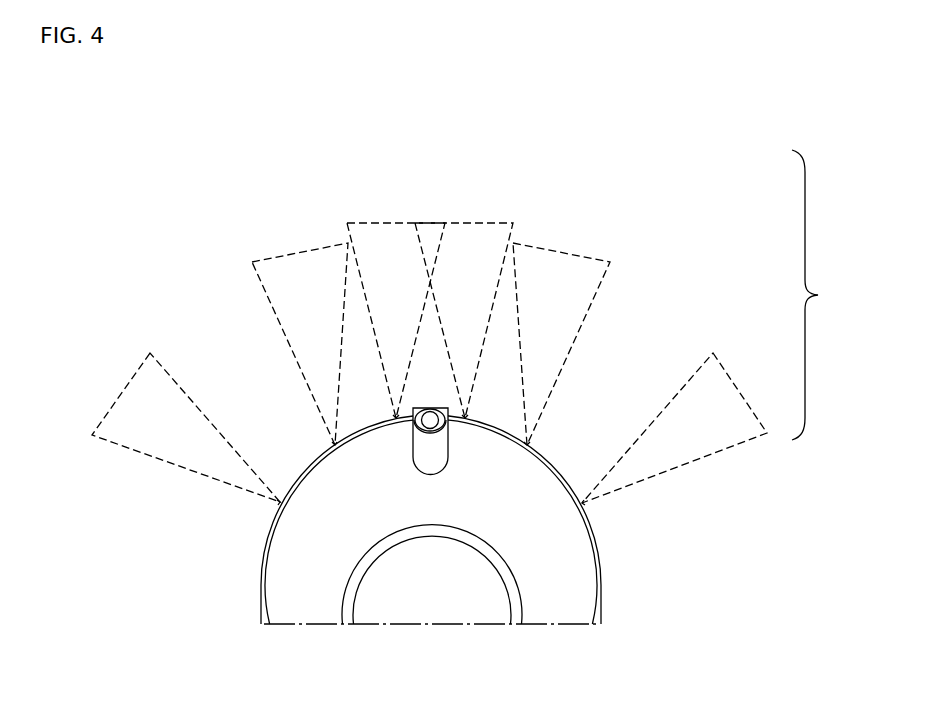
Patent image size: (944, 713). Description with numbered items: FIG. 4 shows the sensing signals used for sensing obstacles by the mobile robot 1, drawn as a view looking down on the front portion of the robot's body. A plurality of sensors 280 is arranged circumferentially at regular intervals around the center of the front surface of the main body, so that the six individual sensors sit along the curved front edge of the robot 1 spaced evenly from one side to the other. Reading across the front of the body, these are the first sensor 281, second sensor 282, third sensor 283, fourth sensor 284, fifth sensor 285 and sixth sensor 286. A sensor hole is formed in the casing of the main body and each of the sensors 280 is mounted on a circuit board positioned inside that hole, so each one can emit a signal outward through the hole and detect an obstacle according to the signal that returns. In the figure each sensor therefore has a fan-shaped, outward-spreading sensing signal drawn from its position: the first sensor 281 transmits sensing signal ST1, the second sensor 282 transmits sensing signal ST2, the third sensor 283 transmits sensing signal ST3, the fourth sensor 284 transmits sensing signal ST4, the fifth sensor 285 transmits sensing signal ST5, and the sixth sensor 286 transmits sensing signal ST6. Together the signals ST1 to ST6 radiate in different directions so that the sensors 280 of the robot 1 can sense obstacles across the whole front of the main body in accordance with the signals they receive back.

The robot cleaner main body 1 is at (563, 588).
The sensors 280 is at (826, 295).
The first sensor 281 is at (583, 503).
The second sensor 282 is at (531, 446).
The third sensor 283 is at (468, 418).
The fourth sensor 284 is at (393, 418).
The fifth sensor 285 is at (322, 445).
The sixth sensor 286 is at (282, 506).
The sensing signal ST1 is at (737, 387).
The sensing signal ST2 is at (590, 257).
The sensing signal ST3 is at (485, 222).
The sensing signal ST4 is at (373, 222).
The sensing signal ST5 is at (273, 257).
The sensing signal ST6 is at (138, 367).